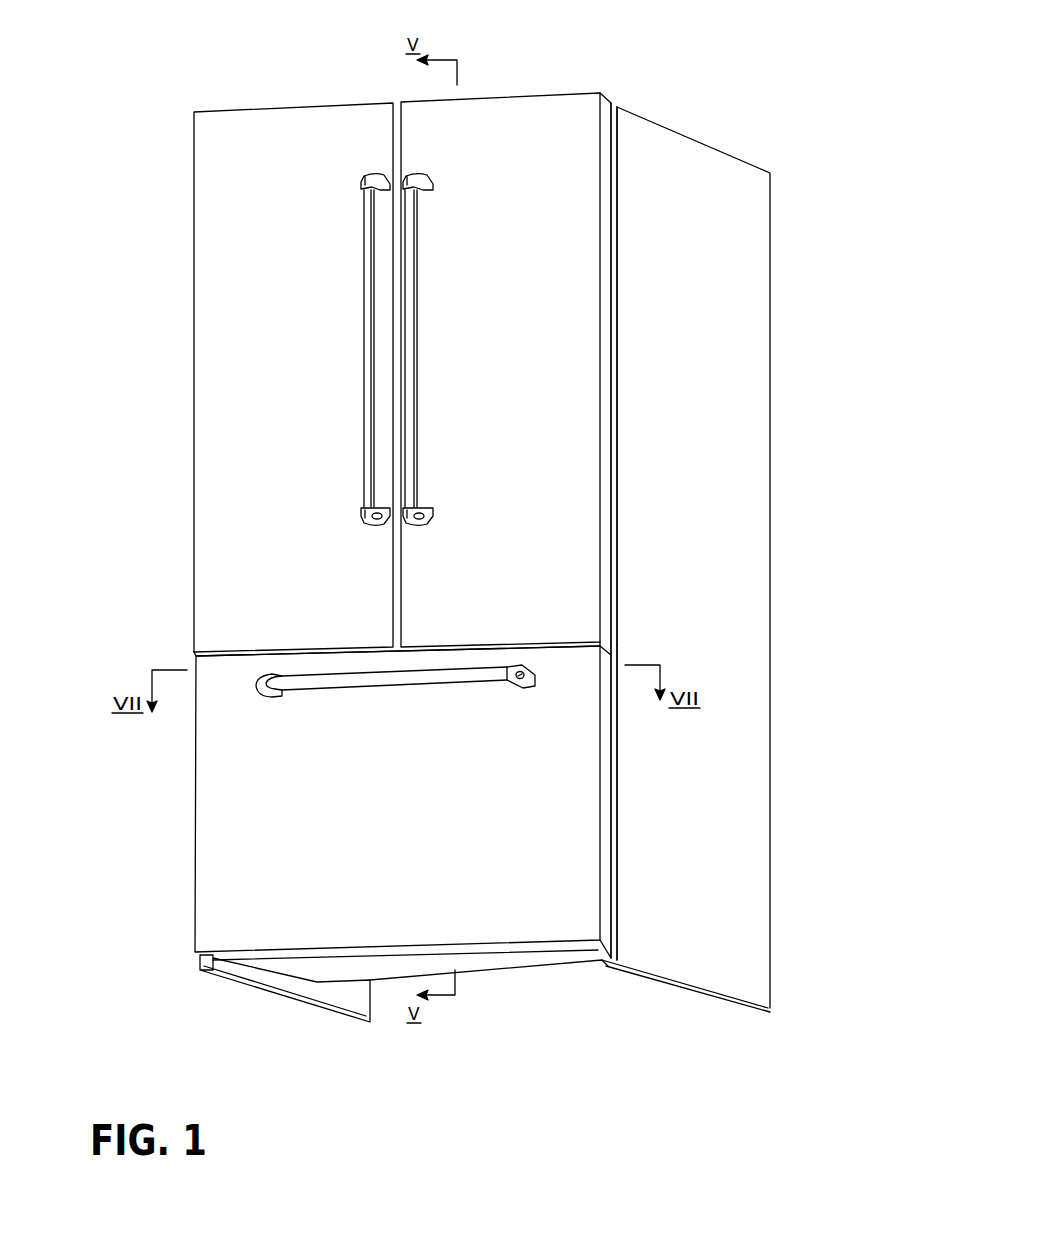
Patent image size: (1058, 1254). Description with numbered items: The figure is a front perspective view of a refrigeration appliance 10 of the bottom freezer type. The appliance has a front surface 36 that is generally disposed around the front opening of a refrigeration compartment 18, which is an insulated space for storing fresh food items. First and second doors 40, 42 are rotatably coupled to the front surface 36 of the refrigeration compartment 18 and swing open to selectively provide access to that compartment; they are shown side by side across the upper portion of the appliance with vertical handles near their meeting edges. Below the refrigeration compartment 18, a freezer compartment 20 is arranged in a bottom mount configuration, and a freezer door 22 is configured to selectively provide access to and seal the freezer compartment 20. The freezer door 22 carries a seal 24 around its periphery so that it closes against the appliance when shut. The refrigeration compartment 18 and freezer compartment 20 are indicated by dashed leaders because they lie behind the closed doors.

The refrigeration appliance 10 is at (758, 82).
The refrigeration compartment 18 is at (505, 453).
The freezer compartment 20 is at (503, 853).
The freezer door 22 is at (290, 787).
The seal 24 is at (613, 743).
The front surface 36 is at (615, 645).
The first door 40 is at (287, 492).
The second door 42 is at (545, 289).